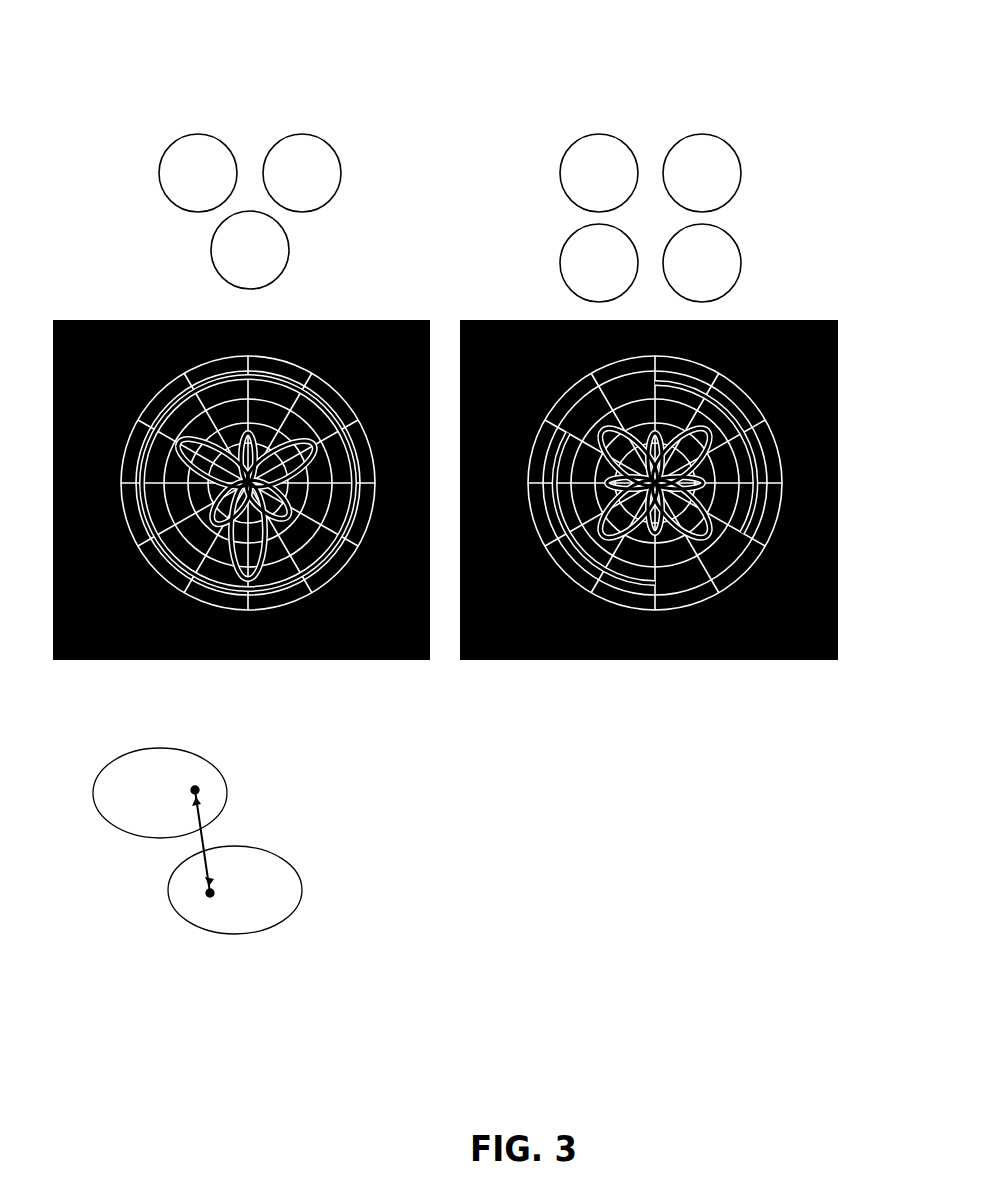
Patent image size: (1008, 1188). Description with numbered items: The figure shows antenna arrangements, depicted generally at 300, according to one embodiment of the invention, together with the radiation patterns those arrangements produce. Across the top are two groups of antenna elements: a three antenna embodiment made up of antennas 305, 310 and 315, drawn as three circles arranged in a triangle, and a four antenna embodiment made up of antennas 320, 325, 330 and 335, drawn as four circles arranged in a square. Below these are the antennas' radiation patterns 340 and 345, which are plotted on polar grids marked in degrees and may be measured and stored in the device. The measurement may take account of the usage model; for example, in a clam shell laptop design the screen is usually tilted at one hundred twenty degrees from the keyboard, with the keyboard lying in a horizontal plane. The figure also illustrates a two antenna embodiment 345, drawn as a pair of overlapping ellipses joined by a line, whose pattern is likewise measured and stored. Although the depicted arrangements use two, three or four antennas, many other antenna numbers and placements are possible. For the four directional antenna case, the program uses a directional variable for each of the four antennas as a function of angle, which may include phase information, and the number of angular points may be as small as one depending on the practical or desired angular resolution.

The antenna arrangements 300 is at (480, 165).
The antenna 305 is at (151, 143).
The antenna 310 is at (276, 143).
The antenna 315 is at (314, 250).
The antenna 320 is at (546, 173).
The antenna 325 is at (546, 253).
The antenna 330 is at (772, 147).
The antenna 335 is at (778, 253).
The antenna radiation pattern 340 is at (687, 490).
The two antenna embodiment radiation pattern 345 is at (225, 627).